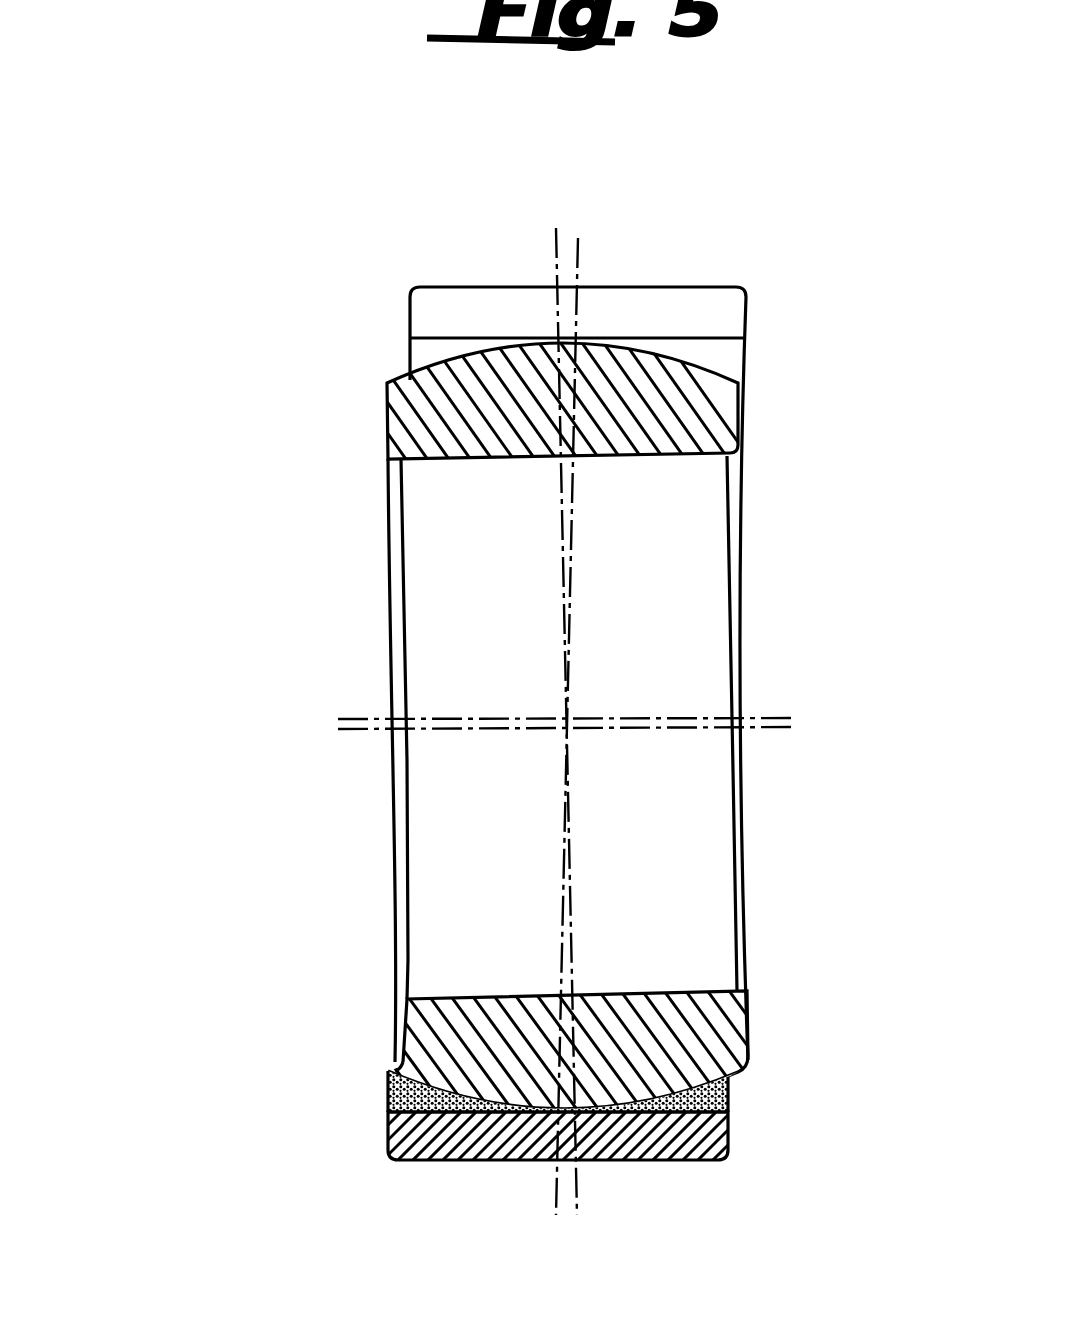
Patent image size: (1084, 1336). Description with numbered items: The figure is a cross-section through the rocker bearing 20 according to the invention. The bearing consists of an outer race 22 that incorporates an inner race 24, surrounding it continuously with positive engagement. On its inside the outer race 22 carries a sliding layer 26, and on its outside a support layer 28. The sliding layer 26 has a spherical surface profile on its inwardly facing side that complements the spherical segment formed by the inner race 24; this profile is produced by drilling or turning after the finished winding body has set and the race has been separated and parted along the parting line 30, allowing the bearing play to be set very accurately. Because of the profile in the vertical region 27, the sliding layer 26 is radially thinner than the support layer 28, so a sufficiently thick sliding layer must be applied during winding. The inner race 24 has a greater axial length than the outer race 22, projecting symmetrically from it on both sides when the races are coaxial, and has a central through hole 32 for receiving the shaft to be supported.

The rocker bearing 20 is at (230, 313).
The outer race 22 is at (745, 323).
The inner race 24 is at (698, 415).
The sliding layer 26 is at (725, 1099).
The vertical region 27 is at (548, 1113).
The support layer 28 is at (668, 1152).
The parting line 30 is at (603, 308).
The central through hole 32 is at (668, 818).